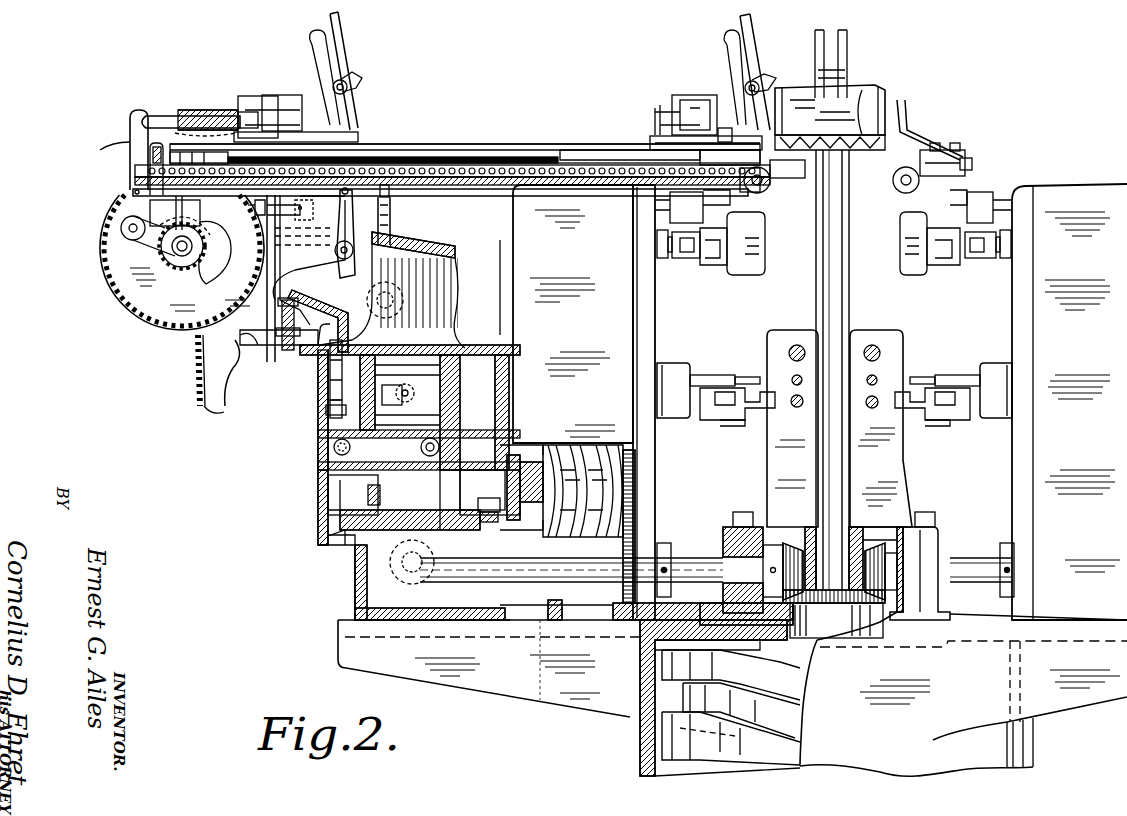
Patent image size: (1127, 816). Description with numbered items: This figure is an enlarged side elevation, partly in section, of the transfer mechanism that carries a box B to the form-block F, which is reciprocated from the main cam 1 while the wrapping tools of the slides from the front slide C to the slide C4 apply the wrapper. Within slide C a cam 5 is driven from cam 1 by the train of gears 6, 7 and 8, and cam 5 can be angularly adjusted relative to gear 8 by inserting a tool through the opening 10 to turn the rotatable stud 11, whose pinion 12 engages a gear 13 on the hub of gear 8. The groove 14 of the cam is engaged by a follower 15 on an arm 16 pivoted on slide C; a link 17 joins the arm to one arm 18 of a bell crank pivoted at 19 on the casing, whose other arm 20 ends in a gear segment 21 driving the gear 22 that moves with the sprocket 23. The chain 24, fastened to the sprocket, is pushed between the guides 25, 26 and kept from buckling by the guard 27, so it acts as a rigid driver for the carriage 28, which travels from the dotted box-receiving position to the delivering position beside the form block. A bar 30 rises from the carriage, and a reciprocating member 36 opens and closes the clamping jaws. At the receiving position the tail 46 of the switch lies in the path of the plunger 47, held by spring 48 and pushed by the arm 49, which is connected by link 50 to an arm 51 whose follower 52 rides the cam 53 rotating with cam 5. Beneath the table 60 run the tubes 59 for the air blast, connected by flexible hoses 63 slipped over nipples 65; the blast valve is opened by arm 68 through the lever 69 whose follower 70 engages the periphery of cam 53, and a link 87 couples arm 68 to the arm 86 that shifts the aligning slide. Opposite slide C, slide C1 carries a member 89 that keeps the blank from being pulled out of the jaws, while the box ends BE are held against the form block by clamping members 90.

The main cam 1 is at (655, 744).
The cam 5 is at (349, 547).
The gear of gear train 6 is at (833, 608).
The gear of gear train 7 is at (794, 543).
The gear 8 is at (480, 522).
The opening 10 is at (318, 505).
The rotatable stud 11 is at (368, 492).
The pinion 12 is at (368, 562).
The gear 13 is at (360, 482).
The groove 14 is at (381, 366).
The follower 15 is at (442, 447).
The arm 16 is at (456, 500).
The link 17 is at (420, 373).
The bell-crank arm 18 is at (395, 302).
The pivot 19 is at (370, 309).
The bell-crank arm 20 is at (236, 349).
The gear segment 21 is at (196, 366).
The gear 22 is at (170, 266).
The sprocket 23 is at (128, 267).
The chain 24 is at (564, 188).
The guide 25 is at (436, 188).
The guide 26 is at (261, 160).
The guard 27 is at (136, 322).
The carriage 28 is at (660, 137).
The bar 30 is at (744, 28).
The reciprocating member 36 is at (724, 47).
The tail of movable switch member 46 is at (672, 105).
The plunger 47 is at (232, 126).
The spring 48 is at (202, 112).
The arm 49 is at (128, 148).
The link 50 is at (308, 196).
The arm 51 is at (338, 232).
The cam follower 52 is at (334, 452).
The cam 53 is at (318, 540).
The tubes 59 is at (496, 152).
The table 60 is at (562, 148).
The flexible hoses 63 is at (390, 222).
The nipples 65 is at (390, 190).
The arm 68 is at (294, 350).
The lever 69 is at (330, 366).
The cam follower 70 is at (326, 410).
The arm 86 is at (130, 190).
The link 87 is at (276, 253).
The member 89 is at (924, 145).
The clamping members 90 is at (846, 62).
The box B is at (905, 105).
The box ends BE is at (808, 94).
The front slide C is at (522, 212).
The slide C1 is at (1046, 194).
The slide C4 is at (903, 338).
The form-block F is at (892, 97).